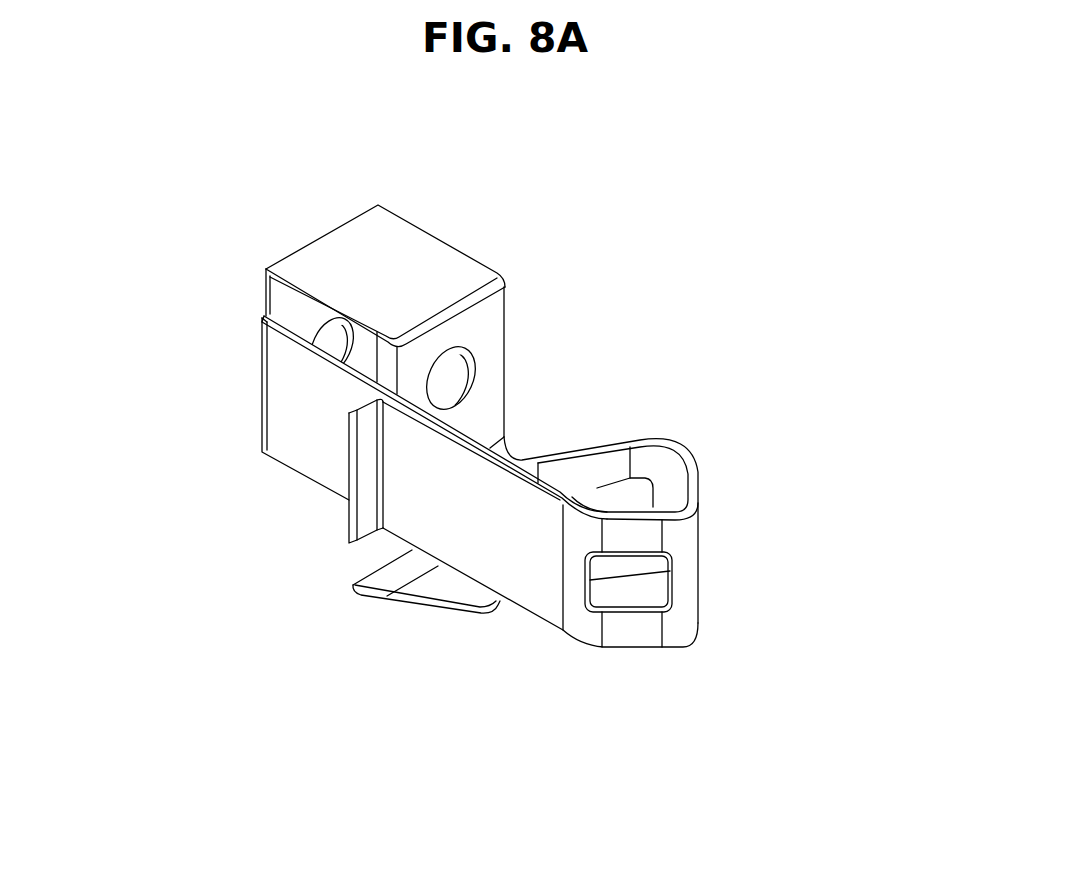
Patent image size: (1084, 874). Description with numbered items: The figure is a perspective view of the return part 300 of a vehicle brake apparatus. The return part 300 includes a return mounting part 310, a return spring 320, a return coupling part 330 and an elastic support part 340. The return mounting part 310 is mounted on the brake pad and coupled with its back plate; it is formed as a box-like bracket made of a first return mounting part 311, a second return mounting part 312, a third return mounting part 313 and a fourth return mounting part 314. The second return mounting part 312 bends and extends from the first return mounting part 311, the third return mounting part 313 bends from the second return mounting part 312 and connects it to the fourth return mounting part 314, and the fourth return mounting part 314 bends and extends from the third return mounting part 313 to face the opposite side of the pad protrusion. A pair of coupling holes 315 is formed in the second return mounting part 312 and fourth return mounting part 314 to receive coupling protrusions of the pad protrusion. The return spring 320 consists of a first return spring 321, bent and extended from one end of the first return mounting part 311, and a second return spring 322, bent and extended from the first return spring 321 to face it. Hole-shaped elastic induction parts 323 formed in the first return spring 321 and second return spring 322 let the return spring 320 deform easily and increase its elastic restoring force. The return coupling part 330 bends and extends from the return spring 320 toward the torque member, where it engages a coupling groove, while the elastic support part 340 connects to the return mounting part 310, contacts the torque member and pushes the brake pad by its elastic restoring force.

The return part 300 is at (704, 178).
The return mounting part 310 is at (245, 438).
The first return mounting part 311 is at (293, 448).
The second return mounting part 312 is at (263, 293).
The third return mounting part 313 is at (423, 265).
The fourth return mounting part 314 is at (492, 335).
The coupling hole 315 is at (363, 405).
The return spring 320 is at (703, 587).
The first return spring 321 is at (607, 463).
The second return spring 322 is at (680, 533).
The elastic induction part 323 is at (623, 495).
The return coupling part 330 is at (372, 522).
The elastic support part 340 is at (441, 594).